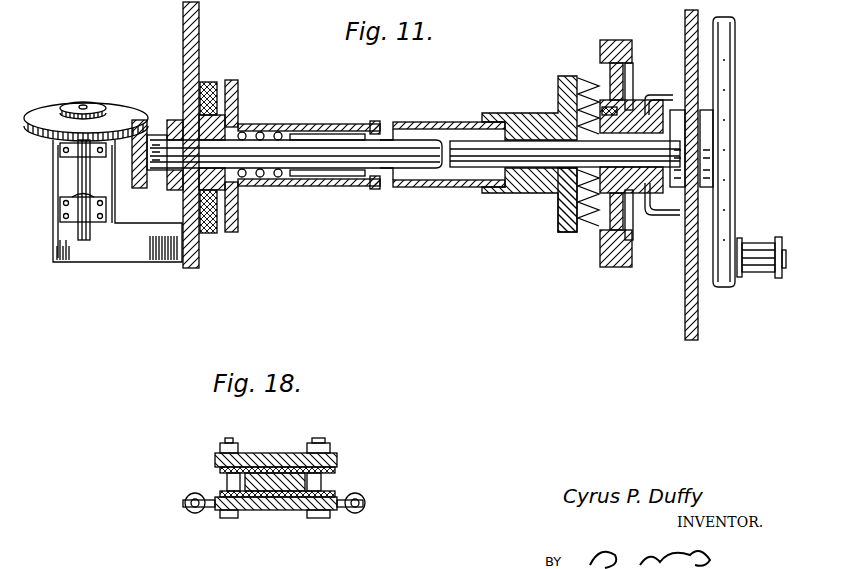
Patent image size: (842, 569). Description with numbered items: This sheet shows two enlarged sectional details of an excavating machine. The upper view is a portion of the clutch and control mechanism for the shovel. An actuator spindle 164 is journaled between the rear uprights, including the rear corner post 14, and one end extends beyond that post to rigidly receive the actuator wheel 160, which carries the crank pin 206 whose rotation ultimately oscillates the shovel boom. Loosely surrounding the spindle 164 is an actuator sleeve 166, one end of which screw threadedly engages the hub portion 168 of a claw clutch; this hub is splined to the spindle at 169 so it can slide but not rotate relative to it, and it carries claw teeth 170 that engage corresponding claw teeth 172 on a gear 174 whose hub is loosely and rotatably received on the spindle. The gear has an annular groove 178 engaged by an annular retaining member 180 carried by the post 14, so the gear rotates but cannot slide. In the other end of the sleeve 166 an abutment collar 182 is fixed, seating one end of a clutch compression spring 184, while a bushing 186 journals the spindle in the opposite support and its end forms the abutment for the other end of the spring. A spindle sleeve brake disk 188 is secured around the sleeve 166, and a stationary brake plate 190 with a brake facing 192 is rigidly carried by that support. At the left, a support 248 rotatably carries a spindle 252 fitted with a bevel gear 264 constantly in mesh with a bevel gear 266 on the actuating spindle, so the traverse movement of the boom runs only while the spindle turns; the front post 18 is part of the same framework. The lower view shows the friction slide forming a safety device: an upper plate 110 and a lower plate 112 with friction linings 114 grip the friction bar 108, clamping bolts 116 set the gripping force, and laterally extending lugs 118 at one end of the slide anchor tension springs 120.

In FIG. 11, the front post 18 is at (199, 38).
In FIG. 11, the stationary brake plate 190 is at (205, 82).
In FIG. 11, the bevel gear 264 is at (50, 125).
In FIG. 11, the bushing 186 is at (168, 120).
In FIG. 11, the spindle sleeve brake disk 188 is at (240, 100).
In FIG. 11, the actuator sleeve 166 is at (318, 124).
In FIG. 11, the actuator spindle 164 is at (410, 150).
In FIG. 11, the hub portion 168 is at (522, 114).
In FIG. 11, the claw teeth 172 is at (597, 77).
In FIG. 11, the annular groove 178 is at (630, 100).
In FIG. 11, the annular retaining member 180 is at (657, 95).
In FIG. 11, the actuator wheel 160 is at (722, 117).
In FIG. 11, the rear corner post 14 is at (687, 319).
In FIG. 11, the crank pin 206 is at (762, 243).
In FIG. 11, the spline 169 is at (558, 170).
In FIG. 11, the claw teeth 170 is at (590, 218).
In FIG. 11, the gear 174 is at (603, 255).
In FIG. 11, the spindle 252 is at (80, 178).
In FIG. 11, the bevel gear 266 is at (141, 188).
In FIG. 11, the support 248 is at (67, 250).
In FIG. 11, the brake facing 192 is at (213, 233).
In FIG. 11, the clutch compression spring 184 is at (275, 188).
In FIG. 11, the abutment collar 182 is at (312, 176).
In FIG. 18, the clamping bolts 116 is at (227, 440).
In FIG. 18, the upper plate 110 is at (250, 460).
In FIG. 18, the friction linings 114 is at (278, 469).
In FIG. 18, the tension springs 120 is at (190, 495).
In FIG. 18, the lugs 118 is at (210, 515).
In FIG. 18, the friction bar 108 is at (267, 483).
In FIG. 18, the lower plate 112 is at (287, 503).